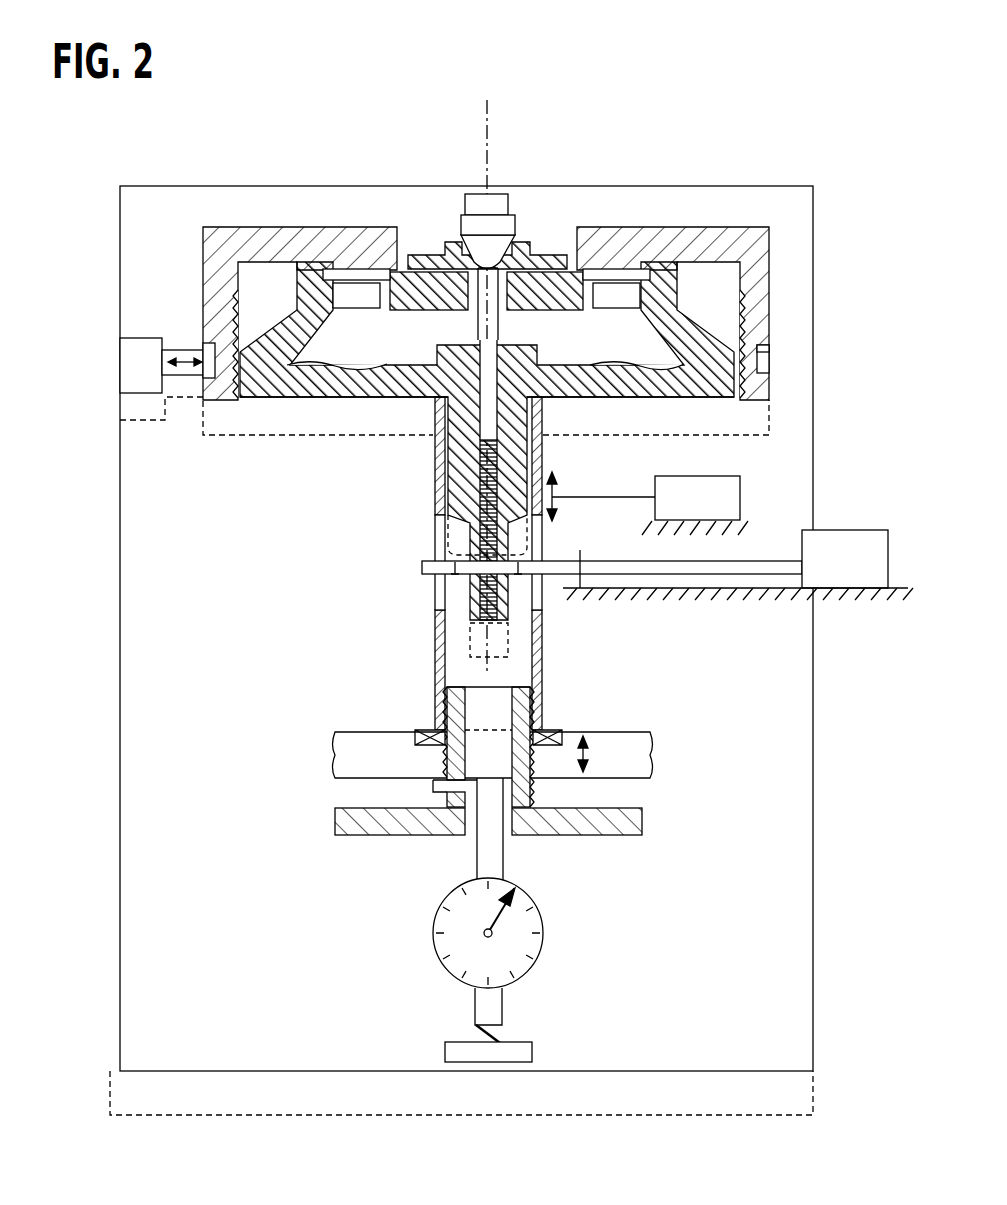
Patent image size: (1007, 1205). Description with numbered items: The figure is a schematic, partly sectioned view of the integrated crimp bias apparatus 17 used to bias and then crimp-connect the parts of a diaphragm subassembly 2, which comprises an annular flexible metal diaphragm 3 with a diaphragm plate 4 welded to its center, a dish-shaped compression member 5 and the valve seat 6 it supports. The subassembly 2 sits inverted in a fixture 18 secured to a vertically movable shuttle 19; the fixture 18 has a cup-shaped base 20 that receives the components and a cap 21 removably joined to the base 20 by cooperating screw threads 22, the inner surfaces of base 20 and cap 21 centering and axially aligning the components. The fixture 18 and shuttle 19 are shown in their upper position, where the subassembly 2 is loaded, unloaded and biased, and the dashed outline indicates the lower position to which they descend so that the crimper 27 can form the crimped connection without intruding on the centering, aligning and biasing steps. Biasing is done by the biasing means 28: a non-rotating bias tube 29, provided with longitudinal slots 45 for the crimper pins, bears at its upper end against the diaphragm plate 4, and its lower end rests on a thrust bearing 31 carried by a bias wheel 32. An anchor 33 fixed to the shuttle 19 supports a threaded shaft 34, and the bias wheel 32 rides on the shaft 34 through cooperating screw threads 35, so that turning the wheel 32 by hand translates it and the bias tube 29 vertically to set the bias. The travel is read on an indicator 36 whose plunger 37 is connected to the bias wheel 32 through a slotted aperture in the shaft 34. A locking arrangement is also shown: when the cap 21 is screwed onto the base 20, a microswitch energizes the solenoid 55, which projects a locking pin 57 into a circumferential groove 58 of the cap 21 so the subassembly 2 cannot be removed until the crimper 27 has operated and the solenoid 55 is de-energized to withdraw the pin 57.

The diaphragm subassembly 2 is at (409, 205).
The flexible metal diaphragm 3 is at (662, 362).
The diaphragm plate 4 is at (412, 395).
The compression member 5 is at (598, 268).
The valve seat 6 is at (420, 258).
The integrated crimp bias apparatus 17 is at (220, 160).
The fixture 18 is at (773, 323).
The shuttle 19 is at (745, 197).
The cup-shaped base 20 is at (713, 383).
The cap 21 is at (773, 228).
The screw threads 22 is at (760, 358).
The crimper 27 is at (695, 567).
The biasing means 28 is at (404, 676).
The bias tube 29 is at (437, 651).
The thrust bearing 31 is at (560, 730).
The bias wheel 32 is at (635, 758).
The anchor 33 is at (627, 827).
The threaded shaft 34 is at (445, 755).
The screw threads 35 is at (517, 802).
The indicator 36 is at (540, 944).
The plunger 37 is at (437, 790).
The slots 45 is at (437, 592).
The solenoid 55 is at (142, 364).
The locking pin 57 is at (182, 350).
The circumferential groove 58 is at (763, 373).